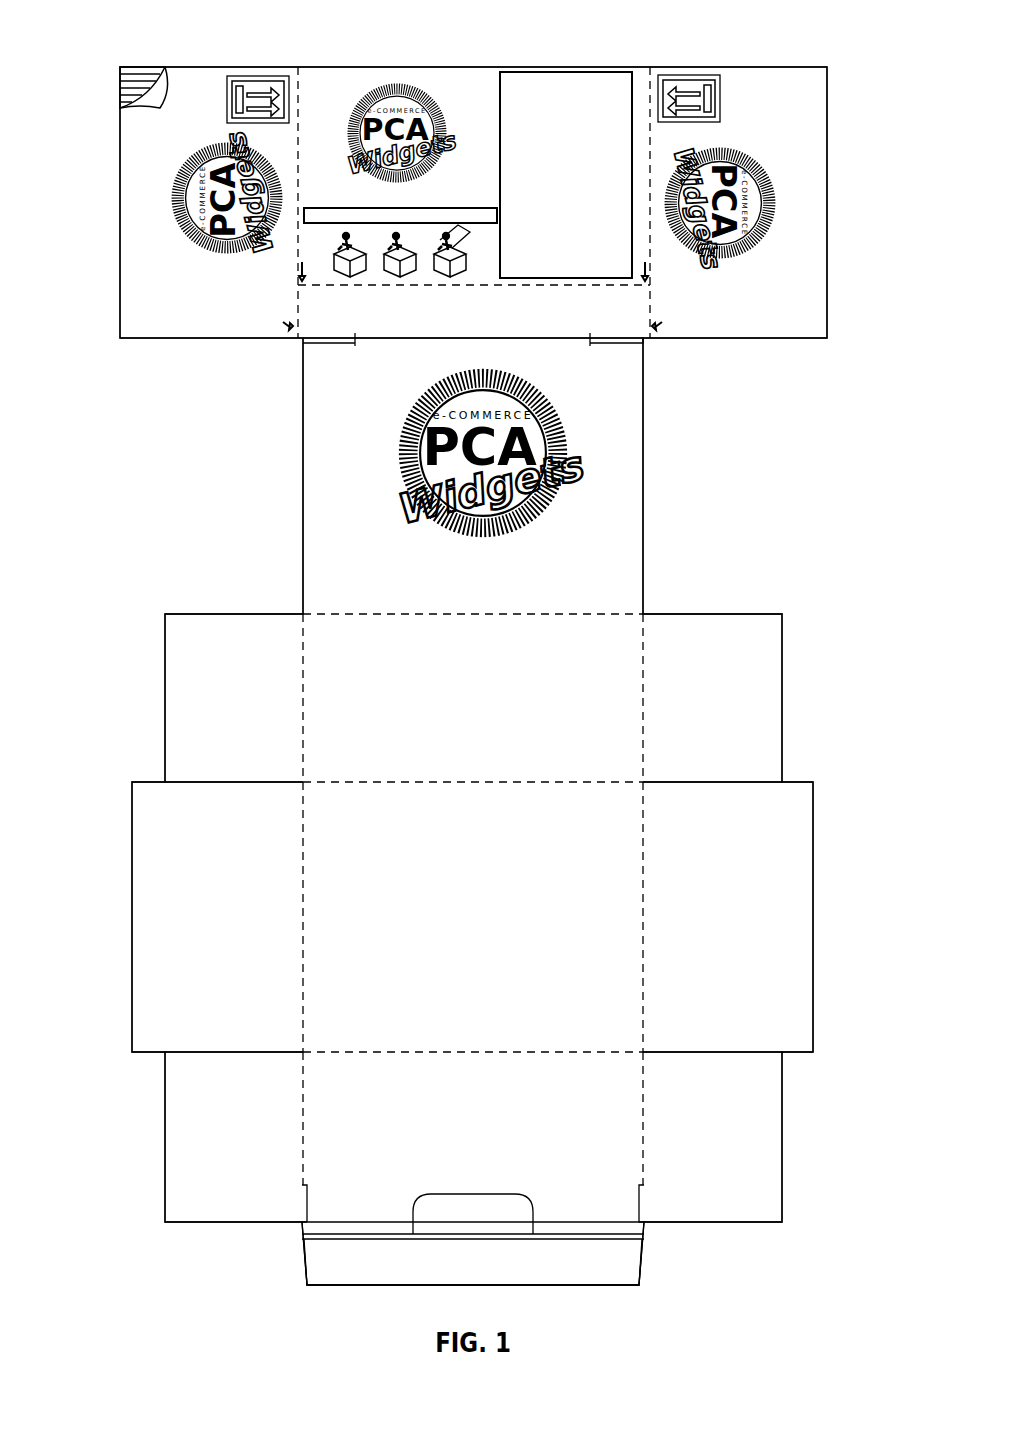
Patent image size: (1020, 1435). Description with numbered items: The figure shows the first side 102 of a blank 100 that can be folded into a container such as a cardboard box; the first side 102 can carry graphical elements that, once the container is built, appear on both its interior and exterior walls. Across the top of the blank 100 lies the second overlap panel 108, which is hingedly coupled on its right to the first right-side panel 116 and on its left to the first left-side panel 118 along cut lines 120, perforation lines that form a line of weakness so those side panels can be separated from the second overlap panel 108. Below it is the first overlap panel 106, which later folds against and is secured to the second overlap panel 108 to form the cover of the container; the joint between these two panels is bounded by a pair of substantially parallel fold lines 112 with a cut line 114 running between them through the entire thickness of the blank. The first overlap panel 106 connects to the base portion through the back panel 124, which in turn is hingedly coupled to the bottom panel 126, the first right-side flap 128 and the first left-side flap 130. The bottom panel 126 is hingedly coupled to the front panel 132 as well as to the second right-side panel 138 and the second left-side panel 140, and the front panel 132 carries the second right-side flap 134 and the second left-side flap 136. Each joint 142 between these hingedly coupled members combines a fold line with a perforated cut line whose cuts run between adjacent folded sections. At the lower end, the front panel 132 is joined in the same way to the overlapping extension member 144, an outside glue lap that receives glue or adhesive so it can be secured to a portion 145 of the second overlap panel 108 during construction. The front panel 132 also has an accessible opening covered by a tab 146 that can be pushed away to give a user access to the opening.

The blank 100 is at (134, 14).
The first side 102 is at (806, 108).
The first overlap panel 106 is at (613, 487).
The second overlap panel 108 is at (430, 75).
The fold lines 112 is at (303, 343).
The cut line 114 is at (430, 338).
The first right-side panel 116 is at (782, 88).
The first left-side panel 118 is at (196, 78).
The cut lines 120 is at (300, 85).
The back panel 124 is at (563, 712).
The bottom panel 126 is at (555, 878).
The first right-side flap 128 is at (760, 670).
The first left-side flap 130 is at (175, 700).
The front panel 132 is at (587, 1223).
The second right-side flap 134 is at (768, 1142).
The second left-side flap 136 is at (194, 1134).
The second right-side panel 138 is at (795, 965).
The second left-side panel 140 is at (146, 987).
The joint 142 is at (545, 1247).
The overlapping extension member 144 is at (322, 1272).
The portion 145 is at (469, 317).
The tab 146 is at (433, 1226).